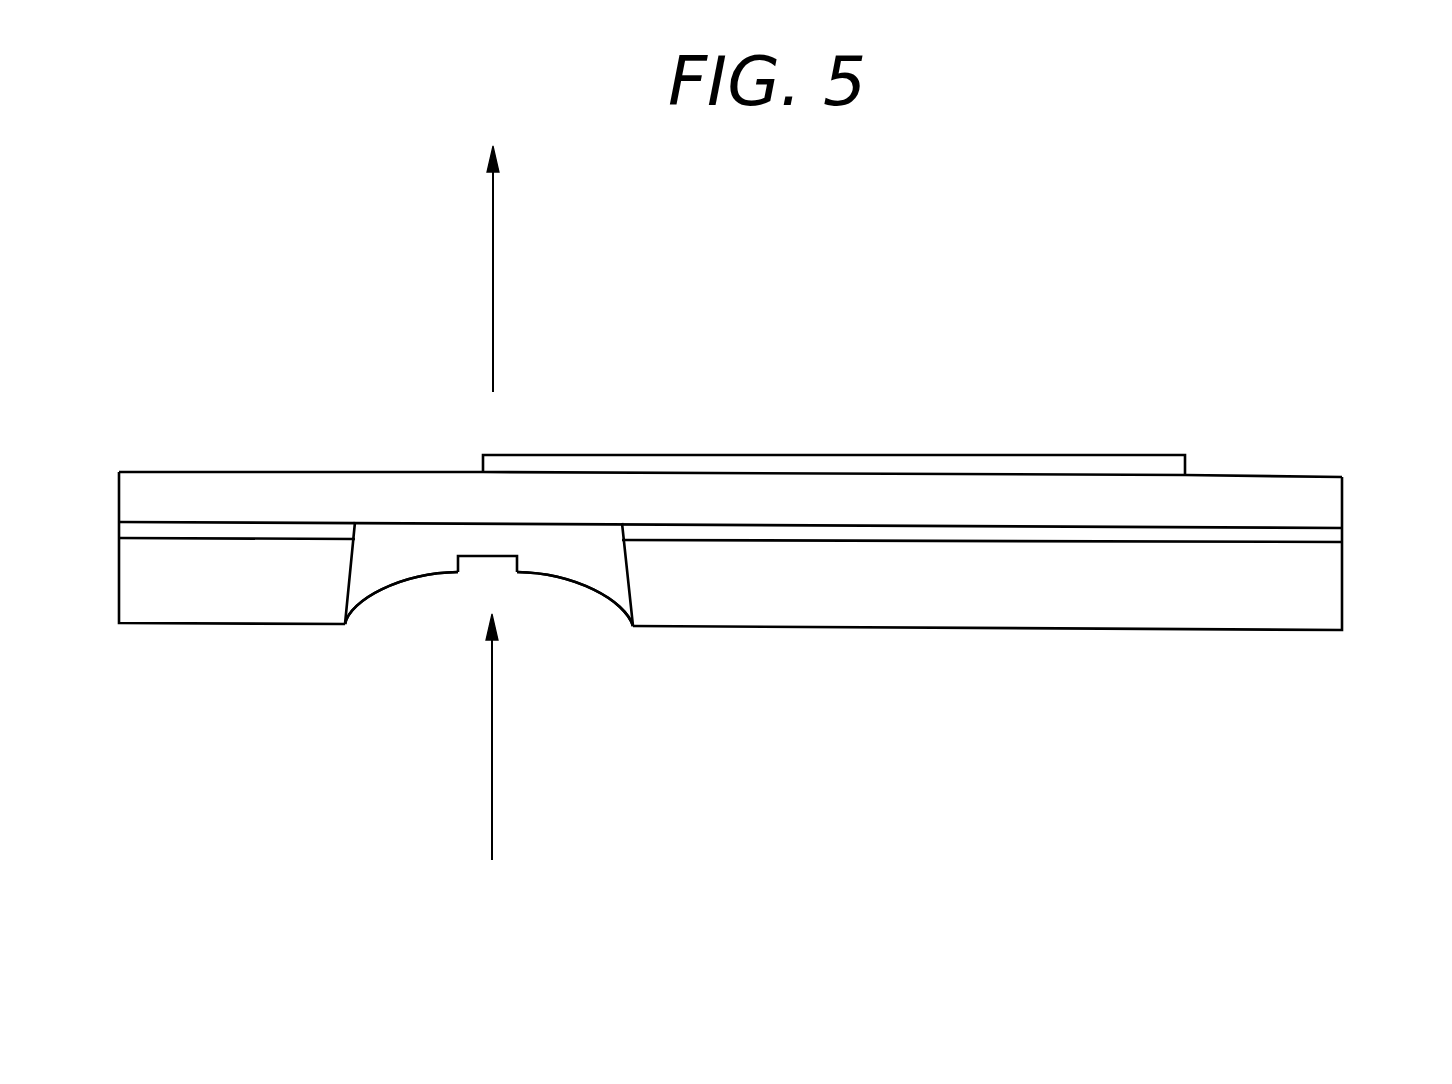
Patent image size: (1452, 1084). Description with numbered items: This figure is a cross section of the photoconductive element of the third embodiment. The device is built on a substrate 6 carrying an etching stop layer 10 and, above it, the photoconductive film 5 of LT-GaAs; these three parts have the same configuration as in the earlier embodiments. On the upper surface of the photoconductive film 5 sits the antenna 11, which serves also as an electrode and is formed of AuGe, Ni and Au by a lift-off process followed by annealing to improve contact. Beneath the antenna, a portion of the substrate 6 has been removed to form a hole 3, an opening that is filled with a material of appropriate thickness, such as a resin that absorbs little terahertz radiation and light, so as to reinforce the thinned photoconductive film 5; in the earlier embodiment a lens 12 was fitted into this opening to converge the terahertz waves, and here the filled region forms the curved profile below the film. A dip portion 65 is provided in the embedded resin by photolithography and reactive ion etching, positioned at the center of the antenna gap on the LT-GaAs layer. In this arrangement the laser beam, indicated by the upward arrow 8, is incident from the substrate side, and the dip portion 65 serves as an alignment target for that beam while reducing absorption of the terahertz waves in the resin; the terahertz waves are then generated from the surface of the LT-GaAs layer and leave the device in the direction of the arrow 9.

The hole 3 is at (600, 635).
The photoconductive film 5 is at (1320, 510).
The substrate 6 is at (1327, 598).
The upward flow direction 8 is at (492, 803).
The emitted flow direction 9 is at (493, 275).
The etching stop layer 10 is at (1328, 533).
The antenna 11 is at (1083, 465).
The lens 12 is at (410, 560).
The dip portion 65 is at (498, 577).